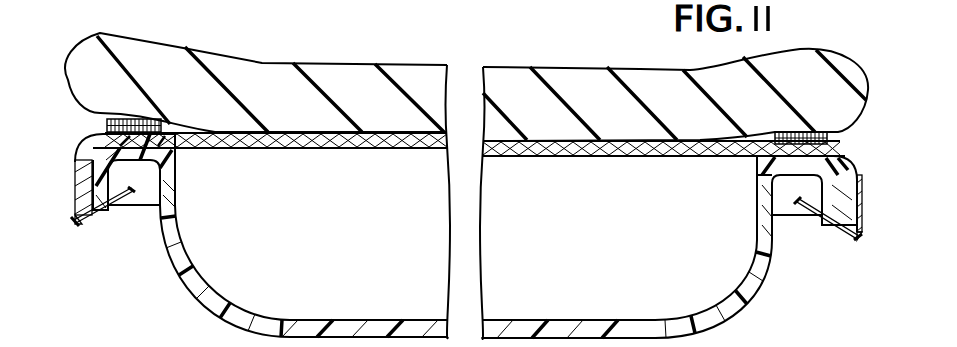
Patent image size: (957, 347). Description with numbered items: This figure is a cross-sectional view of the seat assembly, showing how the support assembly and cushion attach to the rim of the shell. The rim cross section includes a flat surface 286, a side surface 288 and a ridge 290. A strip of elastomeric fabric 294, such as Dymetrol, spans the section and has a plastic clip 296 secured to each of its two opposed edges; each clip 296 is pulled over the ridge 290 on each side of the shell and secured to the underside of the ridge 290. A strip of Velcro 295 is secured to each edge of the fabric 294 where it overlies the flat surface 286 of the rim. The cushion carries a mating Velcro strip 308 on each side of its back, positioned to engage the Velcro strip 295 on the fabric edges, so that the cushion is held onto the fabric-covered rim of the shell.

The Velcro strip 308 is at (147, 122).
The elastomeric fabric 294 is at (378, 151).
The Velcro strip 295 is at (107, 127).
The flat surface 286 is at (182, 150).
The side surface 288 is at (75, 190).
The ridge 290 is at (97, 204).
The plastic clip 296 is at (73, 221).